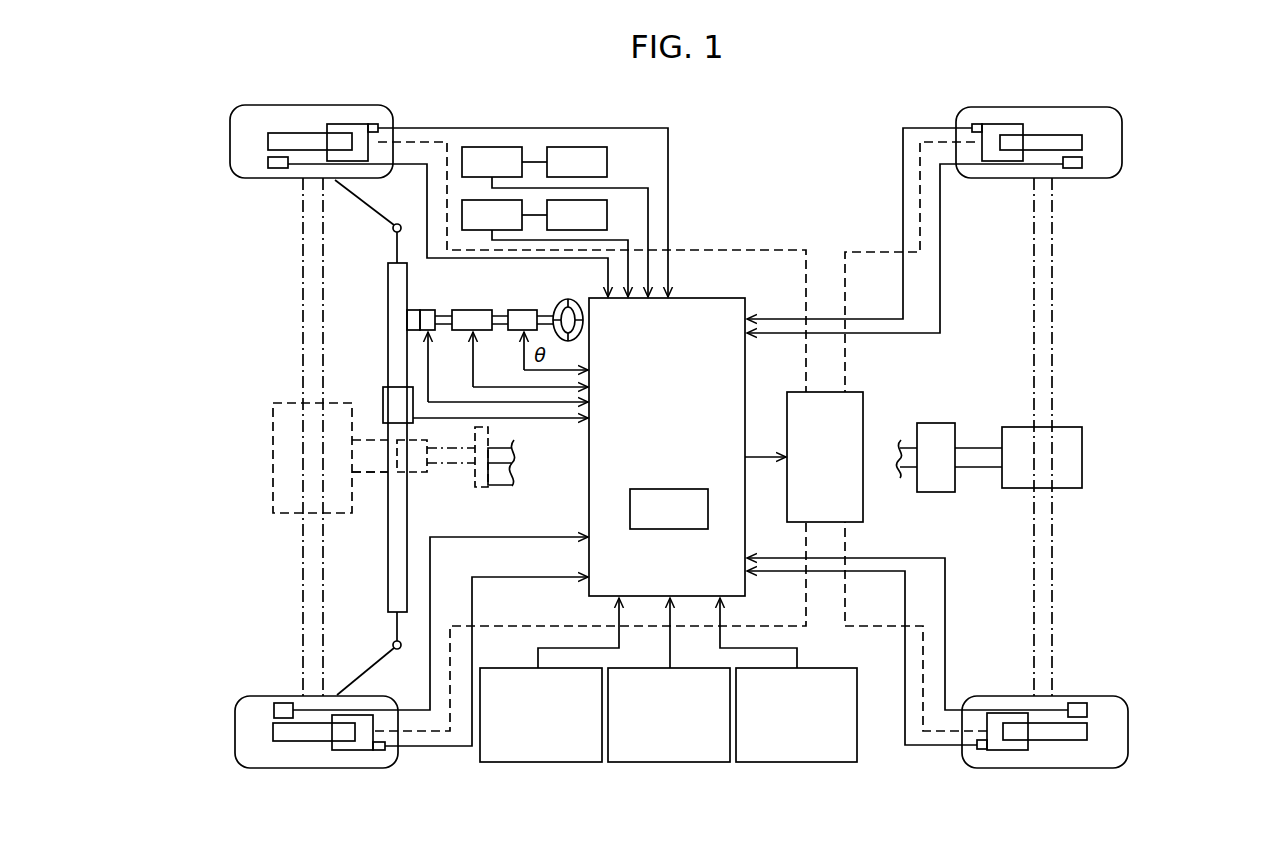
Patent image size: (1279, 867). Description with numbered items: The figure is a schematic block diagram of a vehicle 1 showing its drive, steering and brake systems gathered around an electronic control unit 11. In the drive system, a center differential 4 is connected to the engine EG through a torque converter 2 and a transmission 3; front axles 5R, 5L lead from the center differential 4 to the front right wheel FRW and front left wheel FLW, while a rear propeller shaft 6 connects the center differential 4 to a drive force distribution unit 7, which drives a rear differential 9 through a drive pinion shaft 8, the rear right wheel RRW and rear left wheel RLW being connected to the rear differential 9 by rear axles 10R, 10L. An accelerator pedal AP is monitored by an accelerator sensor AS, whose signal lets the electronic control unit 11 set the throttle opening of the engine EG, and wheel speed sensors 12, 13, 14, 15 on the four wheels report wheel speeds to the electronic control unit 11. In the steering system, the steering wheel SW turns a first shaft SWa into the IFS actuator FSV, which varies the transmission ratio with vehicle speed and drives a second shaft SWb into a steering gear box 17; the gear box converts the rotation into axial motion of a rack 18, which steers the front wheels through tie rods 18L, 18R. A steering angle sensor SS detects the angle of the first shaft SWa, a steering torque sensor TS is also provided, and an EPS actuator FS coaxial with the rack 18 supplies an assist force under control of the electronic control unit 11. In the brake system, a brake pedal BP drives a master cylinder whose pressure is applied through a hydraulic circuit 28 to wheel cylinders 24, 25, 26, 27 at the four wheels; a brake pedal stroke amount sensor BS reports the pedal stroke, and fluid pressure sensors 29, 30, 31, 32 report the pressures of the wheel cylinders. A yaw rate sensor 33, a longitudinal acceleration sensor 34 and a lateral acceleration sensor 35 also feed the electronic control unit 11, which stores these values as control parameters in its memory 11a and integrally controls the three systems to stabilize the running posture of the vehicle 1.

The vehicle 1 is at (1147, 100).
The torque converter 2 is at (378, 475).
The transmission 3 is at (420, 475).
The center differential 4 is at (500, 486).
The front axle 5R is at (302, 285).
The front axle 5L is at (302, 610).
The rear propeller shaft 6 is at (505, 432).
The drive force distribution unit 7 is at (935, 493).
The drive pinion shaft 8 is at (970, 470).
The rear differential 9 is at (1083, 455).
The rear axle 10R is at (1052, 268).
The rear axle 10L is at (1052, 612).
The electronic control unit 11 is at (700, 292).
The memory 11a is at (670, 488).
The wheel speed sensor 12 is at (278, 168).
The wheel speed sensor 13 is at (283, 702).
The wheel speed sensor 14 is at (1072, 168).
The wheel speed sensor 15 is at (1077, 702).
The steering gear box 17 is at (410, 318).
The rack 18 is at (394, 250).
The tie rod 18R is at (338, 181).
The tie rod 18L is at (345, 690).
The wheel cylinder 24 is at (347, 123).
The wheel cylinder 25 is at (352, 751).
The wheel cylinder 26 is at (1003, 123).
The wheel cylinder 27 is at (1008, 751).
The hydraulic circuit 28 is at (790, 391).
The fluid pressure sensor 29 is at (376, 123).
The fluid pressure sensor 30 is at (382, 751).
The fluid pressure sensor 31 is at (976, 123).
The fluid pressure sensor 32 is at (980, 750).
The yaw rate sensor 33 is at (540, 763).
The longitudinal acceleration sensor 34 is at (668, 763).
The lateral acceleration sensor 35 is at (797, 763).
The front right wheel FRW is at (230, 135).
The front left wheel FLW is at (235, 735).
The rear right wheel RRW is at (1122, 137).
The rear left wheel RLW is at (1128, 735).
The engine EG is at (273, 460).
The steering torque sensor TS is at (428, 309).
The IFS actuator FSV is at (473, 309).
The steering angle sensor SS is at (522, 309).
The steering wheel SW is at (570, 299).
The EPS actuator FS is at (383, 395).
The first shaft SWa is at (500, 332).
The second shaft SWb is at (443, 332).
The accelerator sensor AS is at (555, 222).
The accelerator pedal AP is at (564, 162).
The brake pedal stroke amount sensor BS is at (545, 248).
The brake pedal BP is at (564, 215).